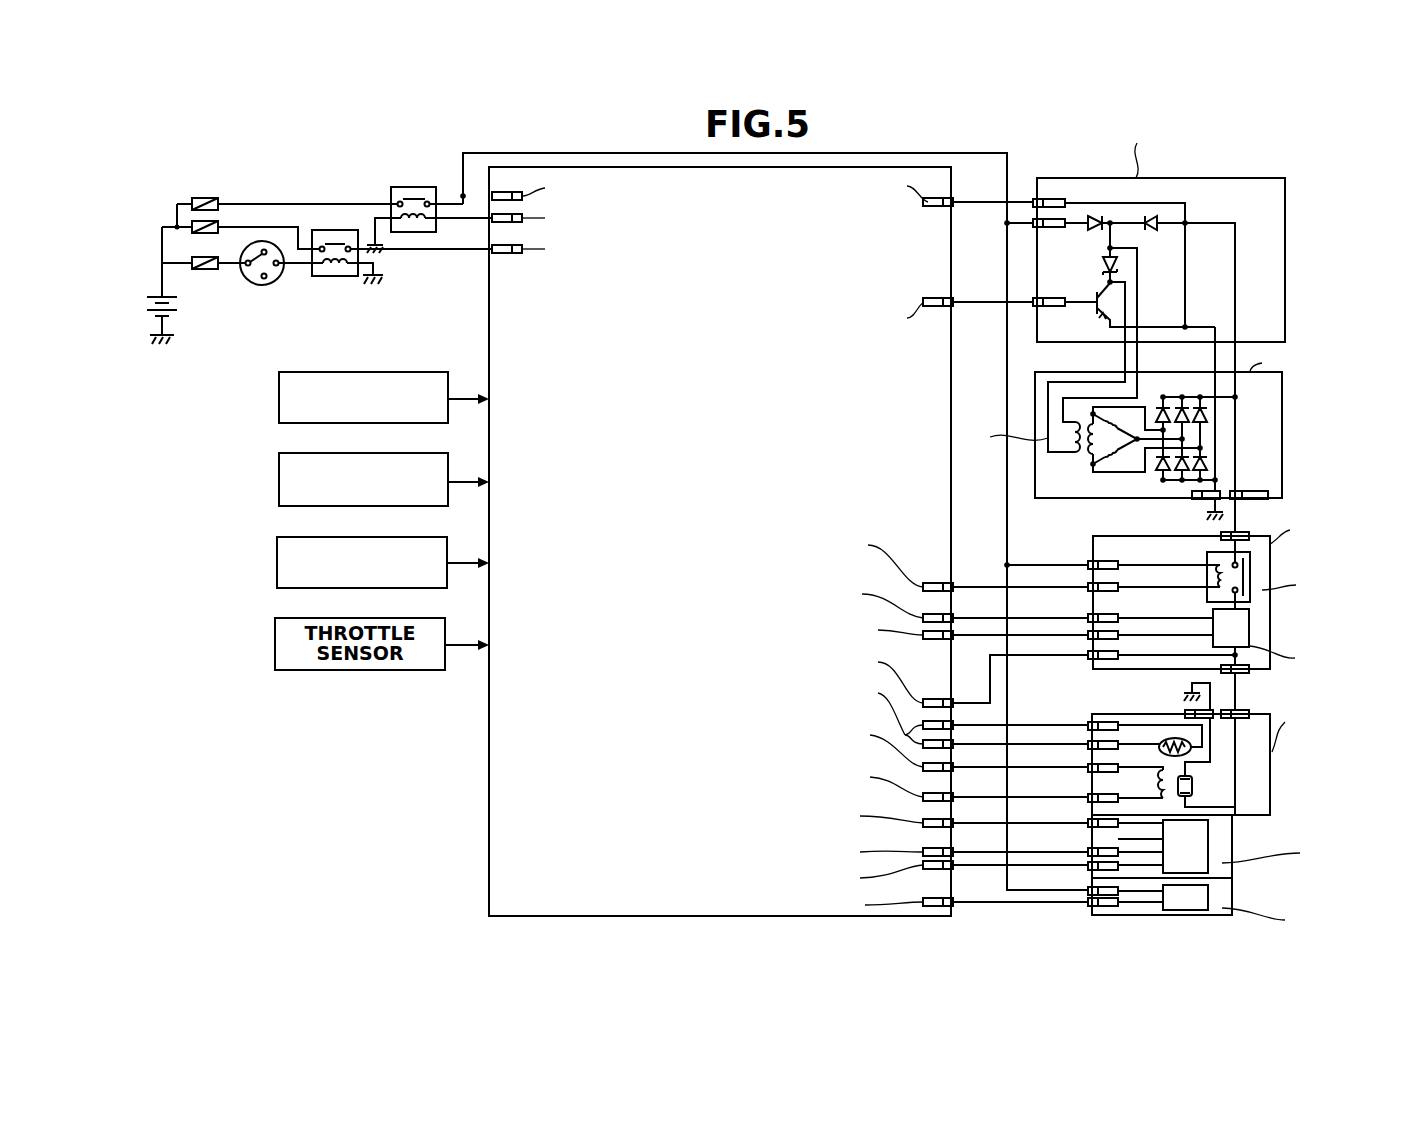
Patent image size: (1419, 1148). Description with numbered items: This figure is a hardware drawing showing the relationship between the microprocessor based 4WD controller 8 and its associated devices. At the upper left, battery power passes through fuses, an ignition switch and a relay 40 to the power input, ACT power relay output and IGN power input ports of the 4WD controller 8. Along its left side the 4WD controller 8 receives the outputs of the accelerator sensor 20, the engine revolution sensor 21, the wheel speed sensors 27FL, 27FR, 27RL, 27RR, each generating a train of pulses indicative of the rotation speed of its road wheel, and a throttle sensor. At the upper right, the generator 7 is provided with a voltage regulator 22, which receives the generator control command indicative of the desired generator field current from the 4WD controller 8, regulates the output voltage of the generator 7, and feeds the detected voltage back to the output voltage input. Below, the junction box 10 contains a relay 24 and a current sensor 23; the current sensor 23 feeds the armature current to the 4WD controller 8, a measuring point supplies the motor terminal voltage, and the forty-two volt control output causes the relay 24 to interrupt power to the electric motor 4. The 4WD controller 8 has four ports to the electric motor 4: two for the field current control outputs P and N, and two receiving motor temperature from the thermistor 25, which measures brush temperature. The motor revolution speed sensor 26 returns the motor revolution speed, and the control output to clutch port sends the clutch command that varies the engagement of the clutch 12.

The relay 40 is at (411, 187).
The 4WD controller 8 is at (487, 805).
The accelerator sensor 20 is at (279, 400).
The engine revolution sensor 21 is at (279, 482).
The wheel speed sensor 27FL is at (310, 549).
The wheel speed sensor 27FR is at (310, 549).
The wheel speed sensor 27RL is at (310, 549).
The wheel speed sensor 27RR is at (281, 537).
The voltage regulator 22 is at (1271, 262).
The generator 7 is at (1282, 422).
The junction box 10 is at (1270, 606).
The relay 24 is at (1250, 572).
The current sensor 23 is at (1250, 632).
The electric motor 4 is at (1168, 748).
The thermistor 25 is at (1128, 727).
The motor revolution speed sensor 26 is at (1222, 848).
The clutch 12 is at (1215, 900).